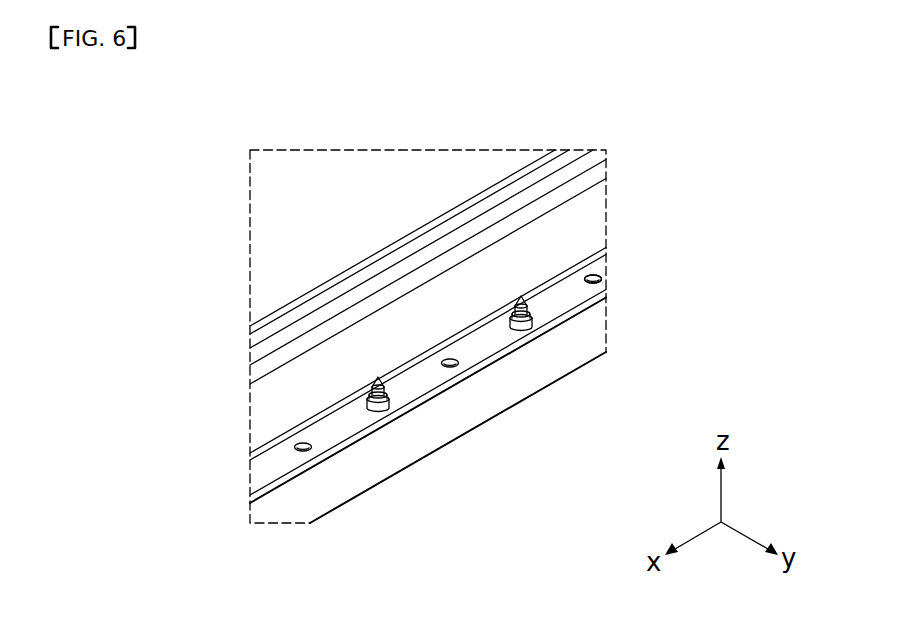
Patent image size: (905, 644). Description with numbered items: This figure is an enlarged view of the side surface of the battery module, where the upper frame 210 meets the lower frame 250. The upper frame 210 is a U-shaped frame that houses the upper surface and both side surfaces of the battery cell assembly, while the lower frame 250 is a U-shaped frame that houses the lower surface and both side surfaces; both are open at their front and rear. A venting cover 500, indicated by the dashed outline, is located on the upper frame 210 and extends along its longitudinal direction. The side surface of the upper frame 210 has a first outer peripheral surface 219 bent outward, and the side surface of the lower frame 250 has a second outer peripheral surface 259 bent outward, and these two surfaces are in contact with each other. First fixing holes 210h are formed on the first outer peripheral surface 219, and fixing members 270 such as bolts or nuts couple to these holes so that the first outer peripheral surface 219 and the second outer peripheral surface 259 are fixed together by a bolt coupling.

The venting cover 500 is at (532, 157).
The upper frame 210 is at (602, 218).
The first outer peripheral surface 219 is at (603, 267).
The first fixing hole 210h is at (601, 281).
The second outer peripheral surface 259 is at (565, 320).
The lower frame 250 is at (377, 467).
The fixing member 270 is at (522, 330).